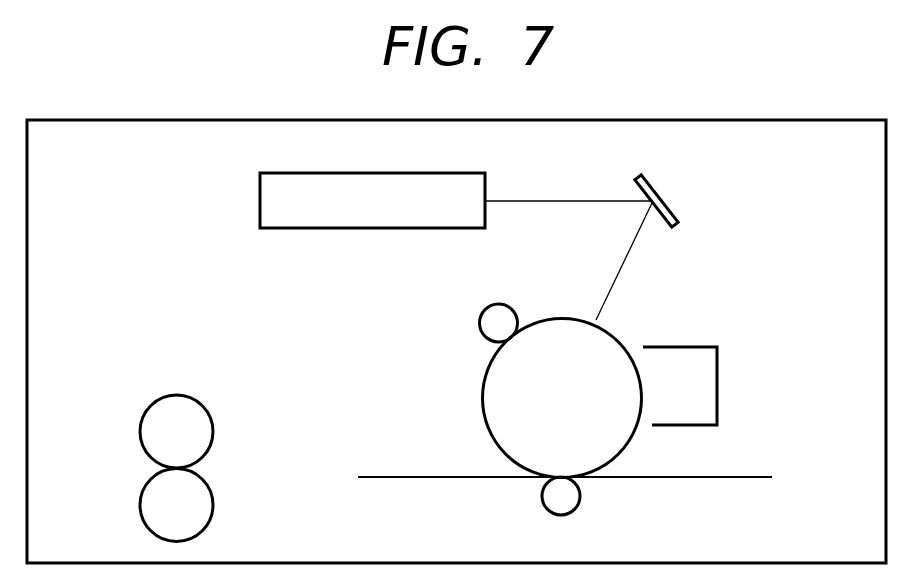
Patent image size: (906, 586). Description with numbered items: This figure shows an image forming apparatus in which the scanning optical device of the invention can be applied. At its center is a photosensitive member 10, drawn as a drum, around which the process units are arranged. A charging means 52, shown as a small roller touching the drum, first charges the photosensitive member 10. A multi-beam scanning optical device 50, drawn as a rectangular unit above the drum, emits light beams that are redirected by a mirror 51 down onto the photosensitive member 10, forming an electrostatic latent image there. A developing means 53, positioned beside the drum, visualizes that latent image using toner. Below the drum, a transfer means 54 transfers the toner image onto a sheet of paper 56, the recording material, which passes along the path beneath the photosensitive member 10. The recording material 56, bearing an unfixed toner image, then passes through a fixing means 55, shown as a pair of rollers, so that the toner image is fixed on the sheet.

The photosensitive member 10 is at (498, 409).
The multi-beam scanning optical device 50 is at (443, 173).
The mirror 51 is at (655, 183).
The charging means 52 is at (490, 305).
The developing means 53 is at (703, 370).
The transfer means 54 is at (568, 500).
The fixing means 55 is at (155, 408).
The sheet of paper 56 is at (760, 472).